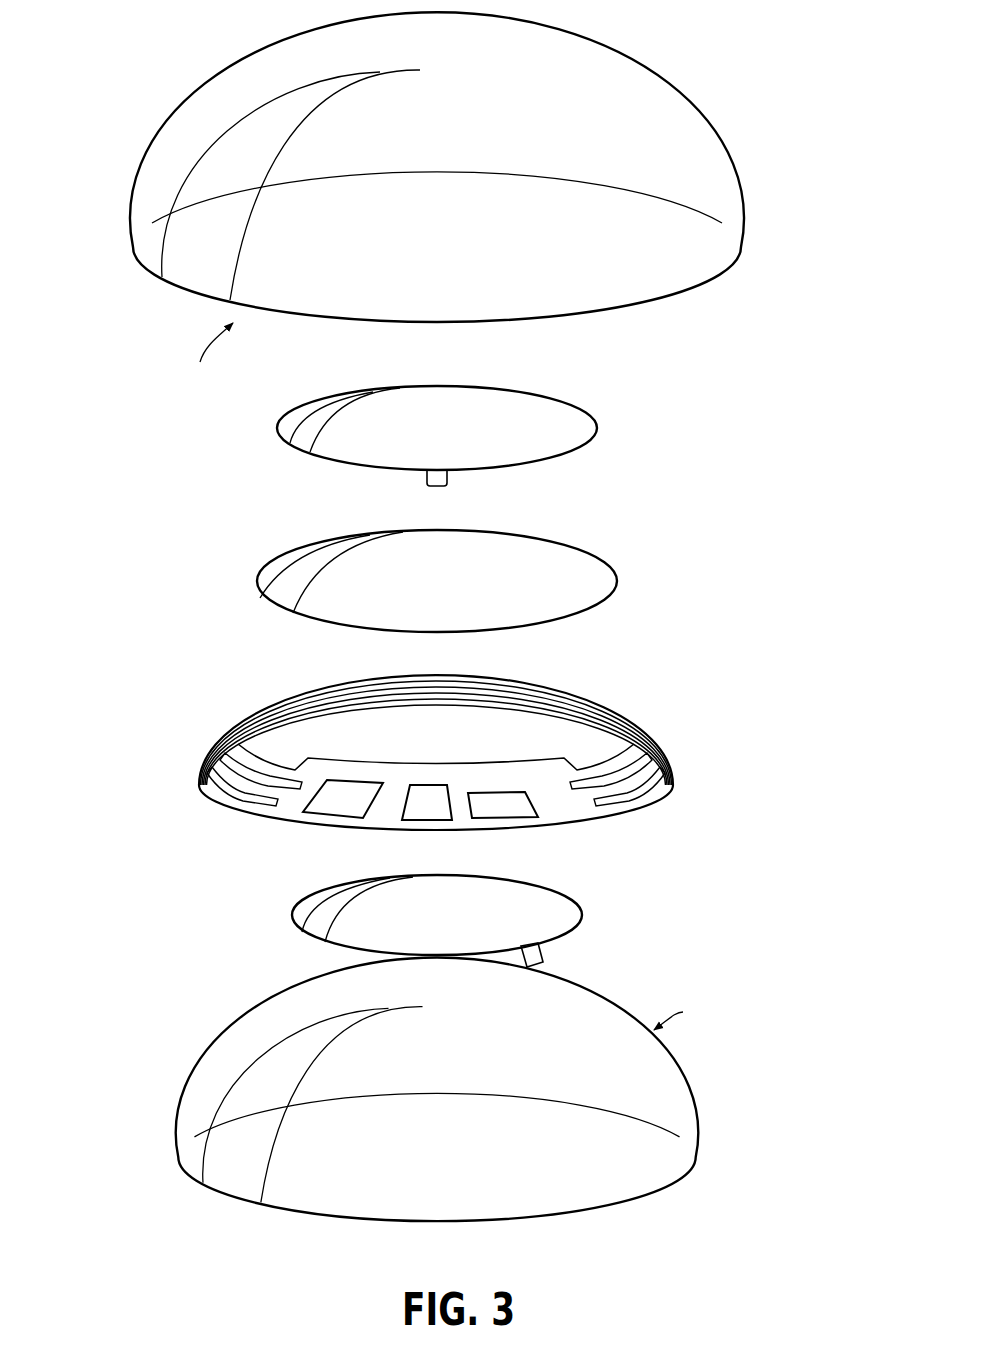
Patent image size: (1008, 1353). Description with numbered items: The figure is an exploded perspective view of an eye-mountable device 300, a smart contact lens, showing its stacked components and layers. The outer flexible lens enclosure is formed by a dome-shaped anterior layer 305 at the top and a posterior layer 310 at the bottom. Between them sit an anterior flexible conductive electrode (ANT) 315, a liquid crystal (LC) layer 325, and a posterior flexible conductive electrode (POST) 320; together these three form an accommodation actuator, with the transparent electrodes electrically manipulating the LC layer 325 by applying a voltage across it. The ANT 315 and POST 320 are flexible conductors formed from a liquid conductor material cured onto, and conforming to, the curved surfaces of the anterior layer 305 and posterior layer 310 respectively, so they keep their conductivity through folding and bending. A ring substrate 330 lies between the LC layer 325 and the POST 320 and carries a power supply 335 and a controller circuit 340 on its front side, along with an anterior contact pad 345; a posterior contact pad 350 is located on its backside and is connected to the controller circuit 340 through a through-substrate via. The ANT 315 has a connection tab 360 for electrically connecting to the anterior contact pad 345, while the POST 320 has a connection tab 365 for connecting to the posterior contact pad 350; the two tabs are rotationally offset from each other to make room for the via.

The eye-mountable device 300 is at (90, 53).
The anterior layer 305 is at (605, 100).
The posterior layer 310 is at (690, 1133).
The anterior flexible conductive electrode (ANT) 315 is at (588, 413).
The posterior flexible conductive electrode (POST) 320 is at (313, 935).
The liquid crystal (LC) layer 325 is at (508, 592).
The ring substrate 330 is at (544, 768).
The power supply 335 is at (333, 800).
The controller circuit 340 is at (423, 793).
The anterior contact pad 345 is at (483, 802).
The posterior contact pad 350 is at (480, 838).
The connection tab 360 is at (447, 482).
The connection tab 365 is at (543, 958).